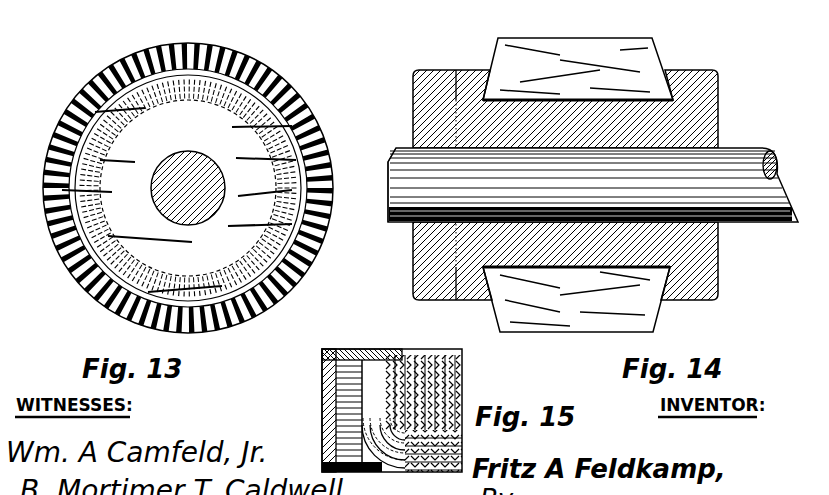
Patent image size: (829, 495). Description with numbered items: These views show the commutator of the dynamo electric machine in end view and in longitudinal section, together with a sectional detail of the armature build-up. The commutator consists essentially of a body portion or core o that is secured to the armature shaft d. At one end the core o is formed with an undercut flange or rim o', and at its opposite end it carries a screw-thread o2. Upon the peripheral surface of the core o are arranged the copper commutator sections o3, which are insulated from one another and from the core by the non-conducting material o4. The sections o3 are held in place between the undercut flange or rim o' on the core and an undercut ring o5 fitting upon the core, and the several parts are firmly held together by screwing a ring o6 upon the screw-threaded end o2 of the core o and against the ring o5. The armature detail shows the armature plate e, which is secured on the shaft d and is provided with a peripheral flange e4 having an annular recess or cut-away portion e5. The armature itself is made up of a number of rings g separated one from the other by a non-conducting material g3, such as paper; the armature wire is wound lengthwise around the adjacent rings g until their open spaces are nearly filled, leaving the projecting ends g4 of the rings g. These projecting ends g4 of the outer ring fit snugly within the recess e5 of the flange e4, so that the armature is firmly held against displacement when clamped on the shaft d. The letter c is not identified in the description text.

In FIG. 14, the body portion or core o is at (565, 185).
In FIG. 13, the undercut flange or rim o' is at (179, 200).
In FIG. 14, the undercut flange or rim o' is at (725, 183).
In FIG. 14, the screw-thread o2 is at (424, 266).
In FIG. 13, the copper commutator sections o3 is at (194, 48).
In FIG. 14, the copper commutator sections o3 is at (578, 185).
In FIG. 13, the non-conducting material o4 is at (219, 50).
In FIG. 14, the non-conducting material o4 is at (650, 288).
In FIG. 14, the undercut ring o5 is at (468, 72).
In FIG. 14, the ring o6 is at (427, 72).
In FIG. 13, the armature shaft d is at (188, 188).
In FIG. 14, the armature shaft d is at (593, 185).
In FIG. 15, the armature plate e is at (322, 383).
In FIG. 15, the peripheral flange e4 is at (364, 354).
In FIG. 15, the annular recess or cut-away portion e5 is at (386, 352).
In FIG. 15, the rings g is at (455, 356).
In FIG. 15, the non-conducting material g3 is at (446, 356).
In FIG. 15, the projecting ends g4 is at (403, 356).
In FIG. 15, the cover c is at (400, 472).